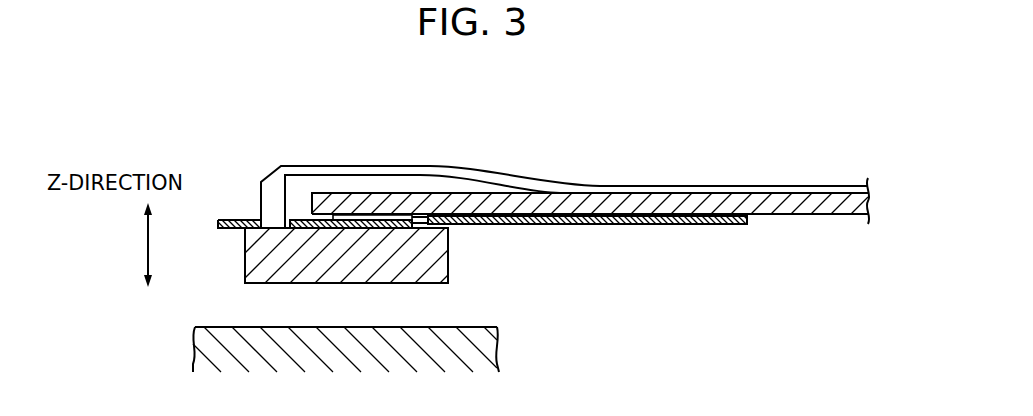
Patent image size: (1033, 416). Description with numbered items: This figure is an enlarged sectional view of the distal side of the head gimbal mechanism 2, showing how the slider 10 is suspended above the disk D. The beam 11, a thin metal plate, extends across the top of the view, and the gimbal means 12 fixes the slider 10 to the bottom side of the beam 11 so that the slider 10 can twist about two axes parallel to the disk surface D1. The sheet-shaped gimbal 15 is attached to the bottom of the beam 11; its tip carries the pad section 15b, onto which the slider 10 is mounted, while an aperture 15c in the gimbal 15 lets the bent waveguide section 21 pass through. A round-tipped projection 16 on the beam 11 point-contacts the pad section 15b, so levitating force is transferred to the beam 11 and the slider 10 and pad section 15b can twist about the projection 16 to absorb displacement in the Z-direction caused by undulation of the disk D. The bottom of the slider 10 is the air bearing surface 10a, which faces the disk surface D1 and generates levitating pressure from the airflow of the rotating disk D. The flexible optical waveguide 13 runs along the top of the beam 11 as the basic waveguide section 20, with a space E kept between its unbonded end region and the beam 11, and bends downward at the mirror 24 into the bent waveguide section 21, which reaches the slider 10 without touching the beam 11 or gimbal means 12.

The head gimbal mechanism 2 is at (728, 105).
The slider 10 is at (449, 256).
The air bearing surface 10a is at (258, 284).
The beam 11 is at (828, 215).
The gimbal means 12 is at (231, 219).
The optical waveguide 13 is at (308, 166).
The gimbal 15 is at (645, 224).
The pad section 15b is at (411, 226).
The aperture 15c is at (281, 228).
The projection 16 is at (336, 221).
The basic waveguide section 20 is at (407, 165).
The bent waveguide section 21 is at (266, 205).
The mirror 24 is at (270, 172).
The space E is at (363, 188).
The disk D is at (498, 350).
The disk surface D1 is at (494, 327).